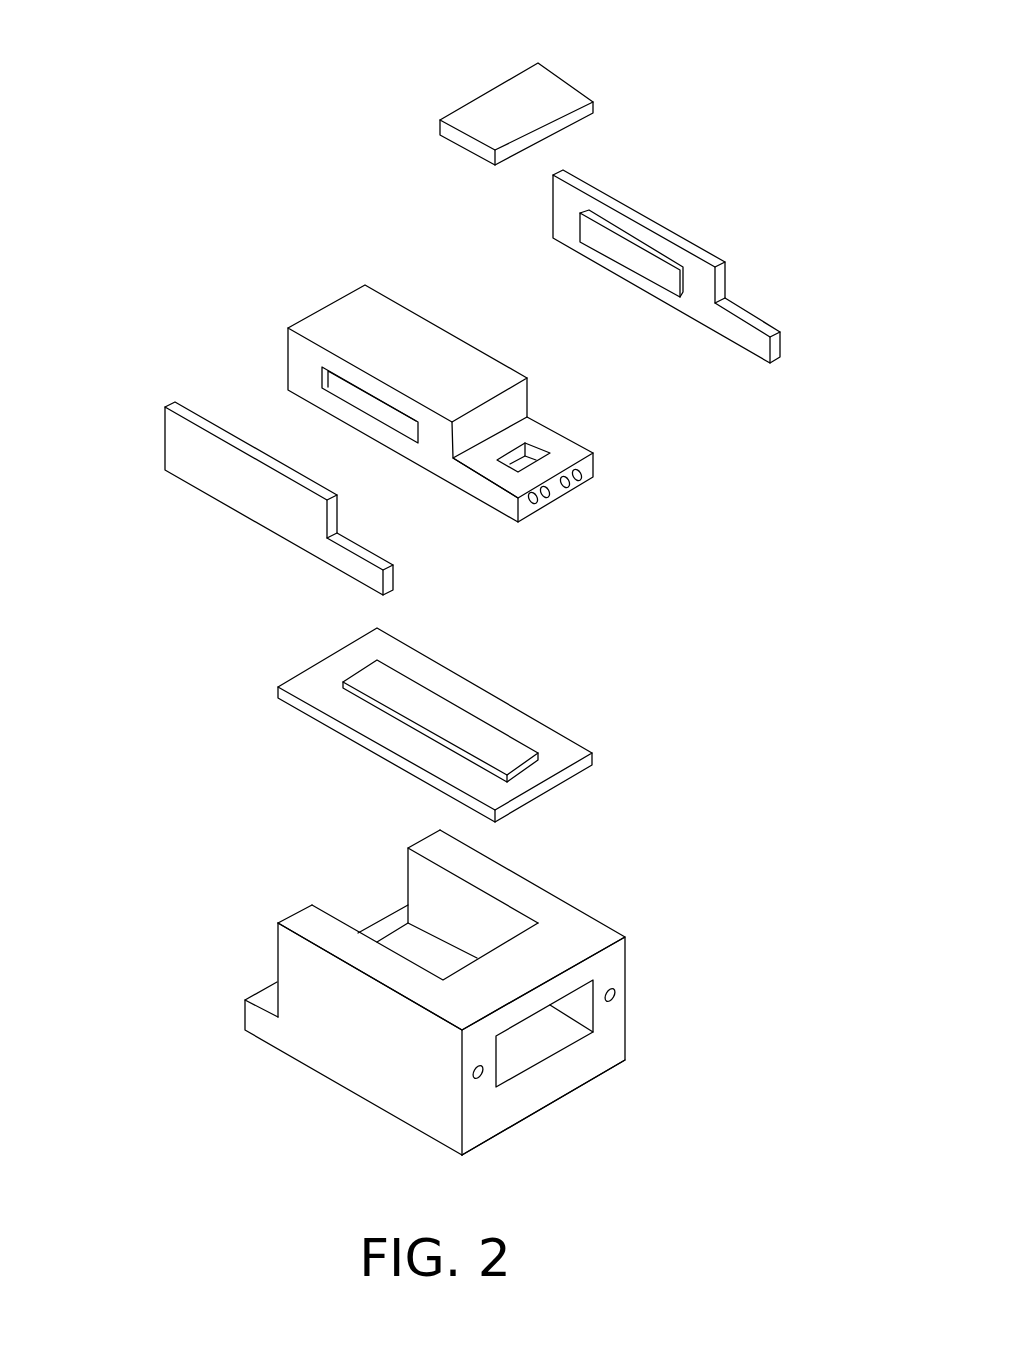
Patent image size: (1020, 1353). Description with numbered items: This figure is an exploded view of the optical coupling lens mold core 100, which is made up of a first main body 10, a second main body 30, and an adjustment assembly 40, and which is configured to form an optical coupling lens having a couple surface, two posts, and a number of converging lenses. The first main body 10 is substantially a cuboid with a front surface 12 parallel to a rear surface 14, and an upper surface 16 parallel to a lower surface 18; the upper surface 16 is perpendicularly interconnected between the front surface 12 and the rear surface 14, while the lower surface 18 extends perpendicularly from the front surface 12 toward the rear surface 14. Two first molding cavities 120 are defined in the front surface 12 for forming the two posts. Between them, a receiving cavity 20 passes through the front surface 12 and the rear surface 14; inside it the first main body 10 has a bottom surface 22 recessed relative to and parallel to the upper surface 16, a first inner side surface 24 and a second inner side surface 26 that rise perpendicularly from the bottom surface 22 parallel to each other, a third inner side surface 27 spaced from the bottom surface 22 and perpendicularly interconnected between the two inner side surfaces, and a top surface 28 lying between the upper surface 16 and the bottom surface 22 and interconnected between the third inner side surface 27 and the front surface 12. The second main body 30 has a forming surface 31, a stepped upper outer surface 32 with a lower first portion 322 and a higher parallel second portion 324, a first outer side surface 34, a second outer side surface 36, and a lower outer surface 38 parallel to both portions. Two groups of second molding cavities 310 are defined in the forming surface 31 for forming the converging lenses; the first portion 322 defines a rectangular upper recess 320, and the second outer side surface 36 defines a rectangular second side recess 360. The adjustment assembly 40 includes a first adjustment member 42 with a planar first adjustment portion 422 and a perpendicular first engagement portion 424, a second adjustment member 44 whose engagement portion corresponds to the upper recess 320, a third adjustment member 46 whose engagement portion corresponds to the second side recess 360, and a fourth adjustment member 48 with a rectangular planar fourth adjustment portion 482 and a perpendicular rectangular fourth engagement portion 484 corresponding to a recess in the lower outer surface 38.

The optical coupling lens mold core 100 is at (257, 62).
The first main body 10 is at (263, 1027).
The front surface 12 is at (612, 1030).
The rear surface 14 is at (277, 953).
The upper surface 16 is at (585, 930).
The lower surface 18 is at (597, 1085).
The receiving cavity 20 is at (385, 836).
The bottom surface 22 is at (400, 945).
The first inner side surface 24 is at (487, 905).
The second inner side surface 26 is at (392, 987).
The third inner side surface 27 is at (507, 938).
The top surface 28 is at (513, 1028).
The first molding cavities 120 is at (617, 993).
The second main body 30 is at (338, 313).
The forming surface 31 is at (523, 510).
The upper outer surface 32 is at (585, 316).
The first outer side surface 34 is at (403, 300).
The second outer side surface 36 is at (435, 452).
The lower outer surface 38 is at (472, 500).
The second molding cavities 310 is at (580, 481).
The upper recess 320 is at (540, 443).
The first portion 322 is at (537, 430).
The second portion 324 is at (477, 365).
The second side recess 360 is at (360, 397).
The adjustment assembly 40 is at (150, 388).
The first adjustment member 42 is at (718, 130).
The first adjustment portion 422 is at (663, 248).
The first engagement portion 424 is at (602, 240).
The second adjustment member 44 is at (500, 100).
The third adjustment member 46 is at (247, 497).
The fourth adjustment member 48 is at (565, 635).
The fourth adjustment portion 482 is at (537, 735).
The fourth engagement portion 484 is at (467, 727).